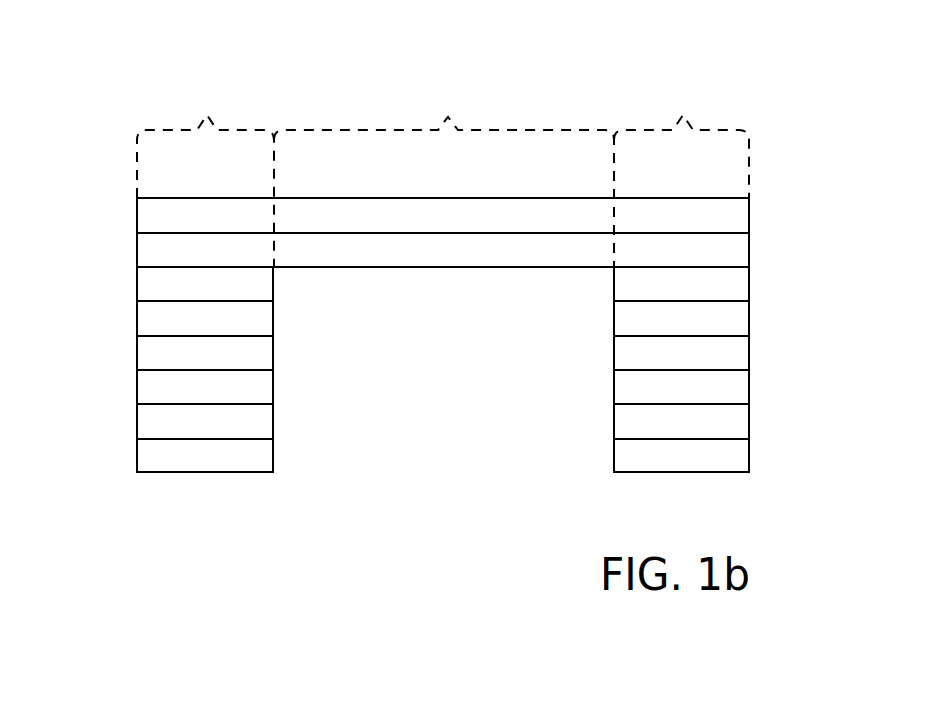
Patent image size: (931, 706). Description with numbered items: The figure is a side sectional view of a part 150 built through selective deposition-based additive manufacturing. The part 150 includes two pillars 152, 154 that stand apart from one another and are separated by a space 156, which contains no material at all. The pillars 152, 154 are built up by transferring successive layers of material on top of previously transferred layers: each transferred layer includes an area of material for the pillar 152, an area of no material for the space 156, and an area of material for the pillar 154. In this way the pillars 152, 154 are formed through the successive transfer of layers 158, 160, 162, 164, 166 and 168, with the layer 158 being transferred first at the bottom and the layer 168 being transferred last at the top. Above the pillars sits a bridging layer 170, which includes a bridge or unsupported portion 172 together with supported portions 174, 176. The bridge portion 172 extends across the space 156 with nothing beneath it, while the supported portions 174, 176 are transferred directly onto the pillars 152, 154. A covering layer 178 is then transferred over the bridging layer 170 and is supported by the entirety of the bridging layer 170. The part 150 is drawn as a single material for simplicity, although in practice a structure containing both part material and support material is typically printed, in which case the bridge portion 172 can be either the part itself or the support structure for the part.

The part 150 is at (175, 90).
The pillar 152 is at (212, 482).
The pillar 154 is at (685, 477).
The space 156 is at (472, 380).
The layer 158 is at (137, 459).
The layer 160 is at (137, 425).
The layer 162 is at (137, 391).
The layer 164 is at (137, 357).
The layer 166 is at (137, 320).
The layer 168 is at (137, 287).
The bridging layer 170 is at (137, 252).
The bridge or unsupported portion 172 is at (444, 178).
The supported portion 174 is at (205, 175).
The supported portion 176 is at (681, 139).
The covering layer 178 is at (137, 214).